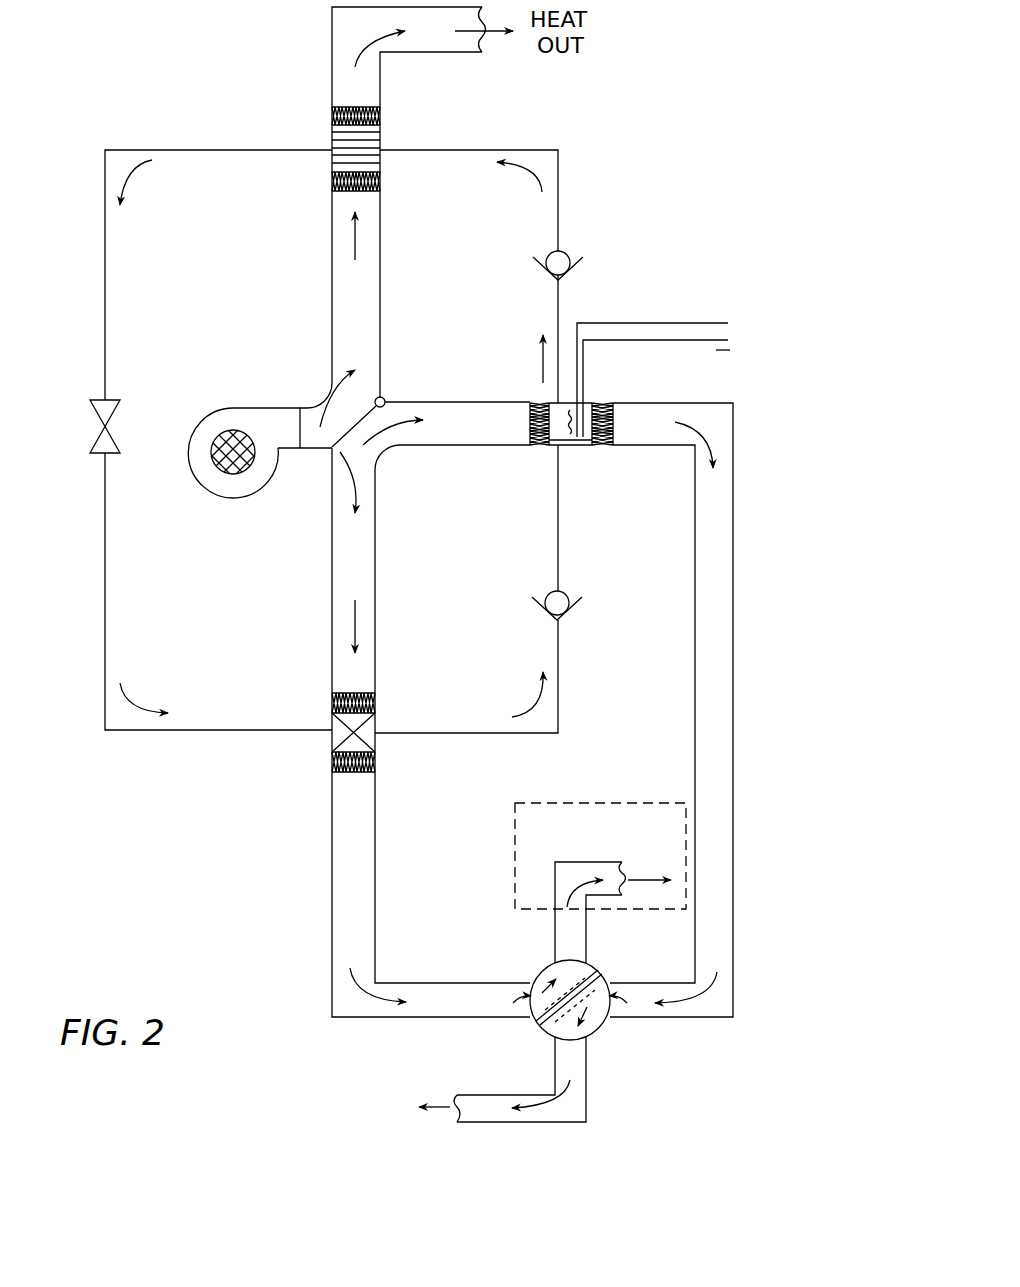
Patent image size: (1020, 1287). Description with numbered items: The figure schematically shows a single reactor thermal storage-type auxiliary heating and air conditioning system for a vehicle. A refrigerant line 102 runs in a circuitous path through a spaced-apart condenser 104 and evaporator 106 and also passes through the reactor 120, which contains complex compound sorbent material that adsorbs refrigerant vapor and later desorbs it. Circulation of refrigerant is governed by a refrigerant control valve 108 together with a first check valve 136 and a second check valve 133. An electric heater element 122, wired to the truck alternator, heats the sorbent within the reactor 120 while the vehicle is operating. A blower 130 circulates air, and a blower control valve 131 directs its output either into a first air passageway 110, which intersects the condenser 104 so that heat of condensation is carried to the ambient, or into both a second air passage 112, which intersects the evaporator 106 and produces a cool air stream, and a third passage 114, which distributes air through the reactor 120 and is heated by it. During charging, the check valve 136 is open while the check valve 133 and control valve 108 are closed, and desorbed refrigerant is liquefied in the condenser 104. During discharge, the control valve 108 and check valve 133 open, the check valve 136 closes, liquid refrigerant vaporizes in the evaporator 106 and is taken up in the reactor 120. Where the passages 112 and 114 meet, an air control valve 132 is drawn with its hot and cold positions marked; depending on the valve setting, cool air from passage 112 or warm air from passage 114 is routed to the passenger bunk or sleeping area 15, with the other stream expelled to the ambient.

The passenger bunk or sleeping area 15 is at (584, 798).
The refrigerant line 102 is at (558, 162).
The refrigerant condenser 104 is at (381, 181).
The evaporator 106 is at (332, 760).
The refrigerant control valve 108 is at (88, 405).
The first air passageway 110 is at (350, 278).
The second air passage 112 is at (350, 580).
The third passage 114 is at (720, 678).
The reactor 120 is at (702, 401).
The electric heater element 122 is at (573, 441).
The blower 130 is at (228, 425).
The blower control valve 131 is at (341, 448).
The four-way valve 132 is at (588, 1040).
The second check valve 133 is at (566, 611).
The first check valve 136 is at (566, 252).